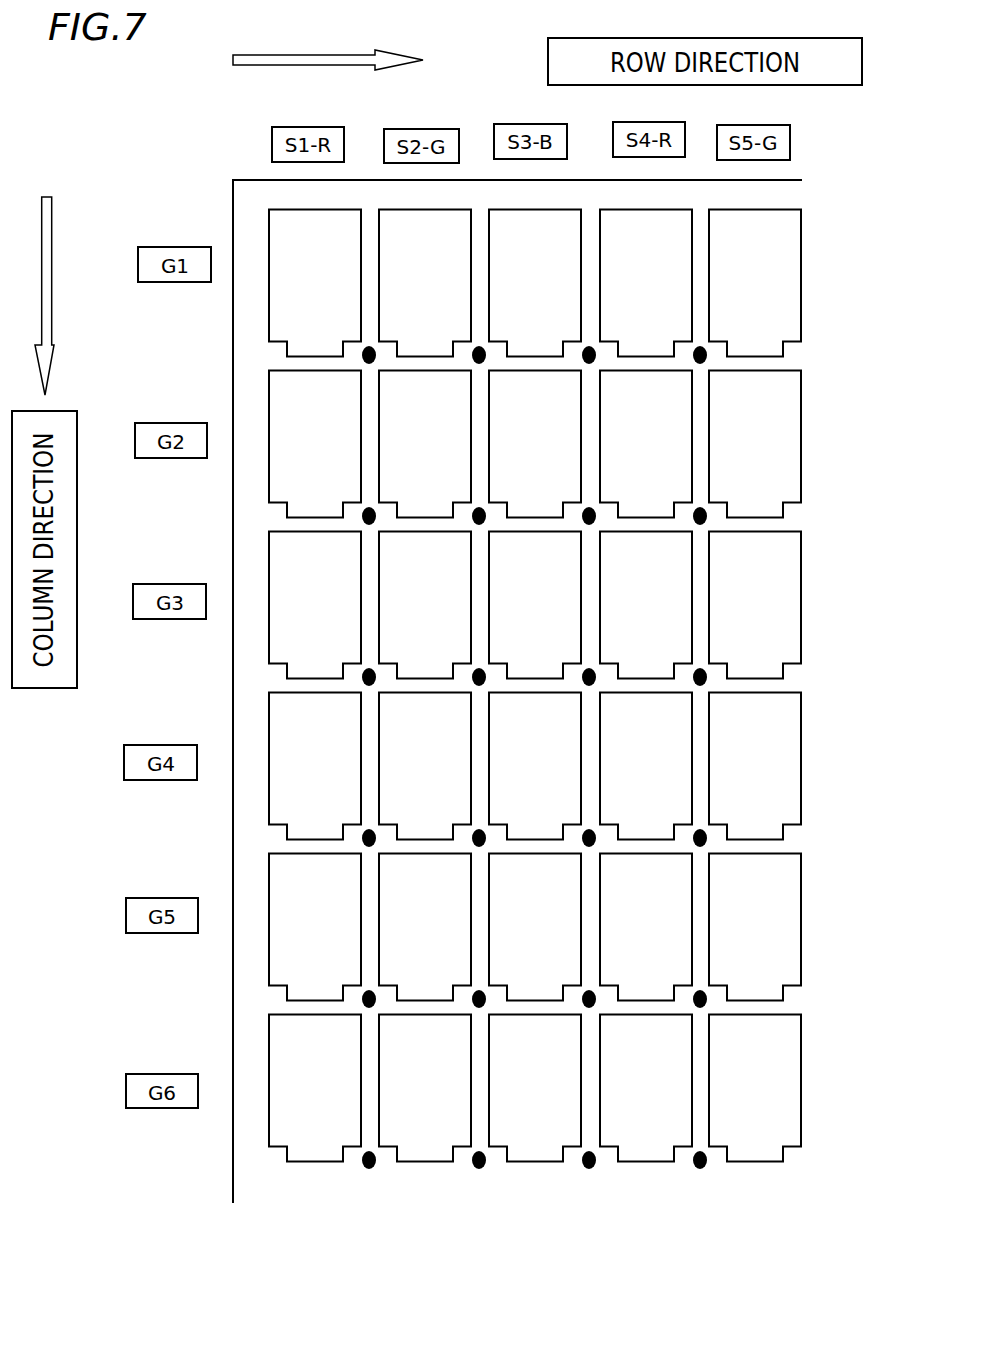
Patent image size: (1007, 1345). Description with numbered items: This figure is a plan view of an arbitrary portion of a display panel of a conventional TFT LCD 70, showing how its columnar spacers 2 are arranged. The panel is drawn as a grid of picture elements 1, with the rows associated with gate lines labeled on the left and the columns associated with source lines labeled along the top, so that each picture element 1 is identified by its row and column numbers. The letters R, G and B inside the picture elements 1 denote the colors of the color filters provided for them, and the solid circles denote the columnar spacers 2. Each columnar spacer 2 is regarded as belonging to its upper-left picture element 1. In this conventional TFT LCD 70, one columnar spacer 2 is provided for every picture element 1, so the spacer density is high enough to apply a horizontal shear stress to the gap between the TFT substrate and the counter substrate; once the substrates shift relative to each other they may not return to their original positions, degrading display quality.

The conventional TFT LCD 70 is at (818, 127).
The picture element 1 is at (790, 307).
The columnar spacer 2 is at (707, 365).